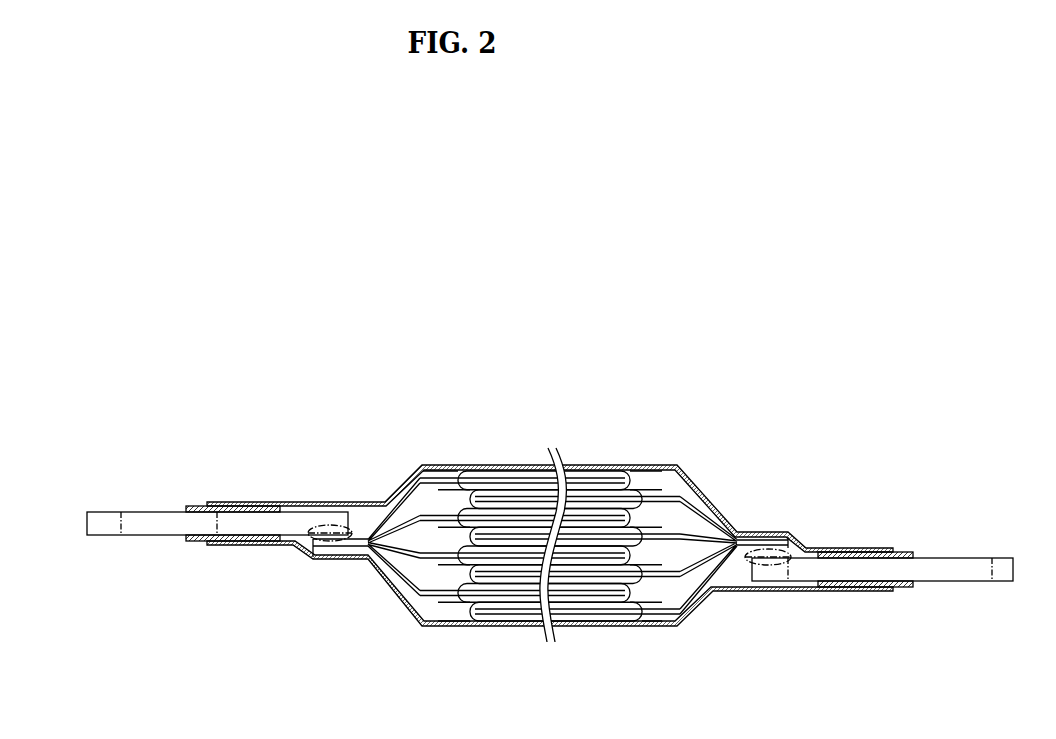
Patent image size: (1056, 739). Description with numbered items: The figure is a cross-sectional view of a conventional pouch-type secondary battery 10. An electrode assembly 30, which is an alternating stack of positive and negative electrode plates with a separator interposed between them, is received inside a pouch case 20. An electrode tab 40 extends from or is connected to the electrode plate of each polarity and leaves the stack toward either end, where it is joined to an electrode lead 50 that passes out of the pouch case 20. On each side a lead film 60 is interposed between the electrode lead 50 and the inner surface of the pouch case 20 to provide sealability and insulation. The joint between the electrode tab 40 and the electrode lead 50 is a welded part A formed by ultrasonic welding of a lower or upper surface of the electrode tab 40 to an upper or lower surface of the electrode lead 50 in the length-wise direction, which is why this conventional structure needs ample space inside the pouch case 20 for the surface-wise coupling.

The pouch-type secondary battery 10 is at (250, 368).
The pouch case 20 is at (607, 465).
The electrode assembly 30 is at (425, 430).
The electrode tab 40 is at (328, 558).
The electrode lead 50 is at (105, 512).
The lead film 60 is at (193, 506).
The welded part A is at (330, 525).